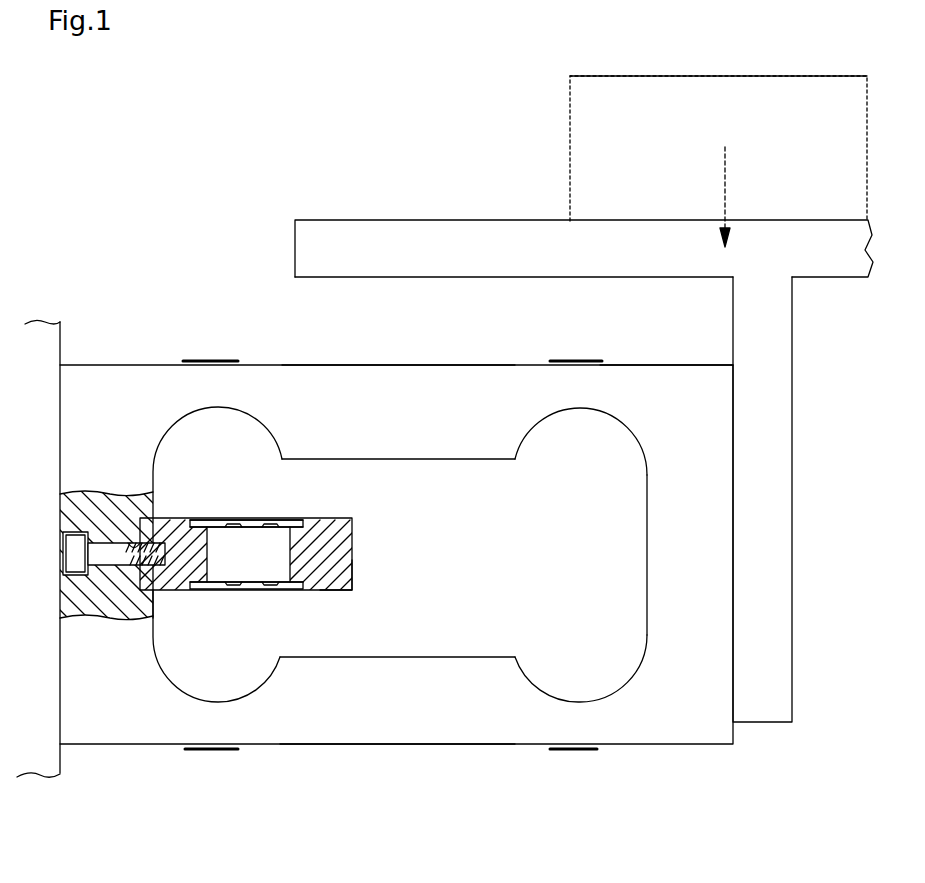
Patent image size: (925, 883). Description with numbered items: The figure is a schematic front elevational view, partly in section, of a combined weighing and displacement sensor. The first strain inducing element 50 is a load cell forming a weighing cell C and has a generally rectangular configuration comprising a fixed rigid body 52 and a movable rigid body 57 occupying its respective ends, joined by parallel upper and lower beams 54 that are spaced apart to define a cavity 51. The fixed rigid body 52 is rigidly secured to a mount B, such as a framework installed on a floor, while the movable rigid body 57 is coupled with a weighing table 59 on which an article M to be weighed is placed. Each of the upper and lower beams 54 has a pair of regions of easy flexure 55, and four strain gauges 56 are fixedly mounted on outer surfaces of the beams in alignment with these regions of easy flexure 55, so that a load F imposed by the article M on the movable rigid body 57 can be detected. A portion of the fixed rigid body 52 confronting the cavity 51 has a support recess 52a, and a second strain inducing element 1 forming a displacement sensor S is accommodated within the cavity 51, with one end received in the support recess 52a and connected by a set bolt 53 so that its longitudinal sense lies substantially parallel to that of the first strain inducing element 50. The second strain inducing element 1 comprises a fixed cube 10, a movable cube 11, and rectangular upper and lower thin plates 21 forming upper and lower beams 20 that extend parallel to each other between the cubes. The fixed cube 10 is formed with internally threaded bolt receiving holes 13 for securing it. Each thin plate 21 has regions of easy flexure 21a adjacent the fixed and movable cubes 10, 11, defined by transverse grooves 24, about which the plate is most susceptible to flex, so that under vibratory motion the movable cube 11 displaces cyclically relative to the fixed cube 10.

The second strain inducing element 1 is at (340, 504).
The fixed cube 10 is at (143, 578).
The movable cube 11 is at (353, 557).
The internally threaded bolt receiving holes 13 is at (123, 548).
The upper and lower beams 20 is at (247, 517).
The upper and lower thin plates 21 is at (205, 517).
The regions of easy flexure 21a is at (266, 517).
The transverse grooves 24 is at (248, 554).
The first strain inducing element 50 is at (414, 352).
The cavity 51 is at (445, 460).
The fixed rigid body 52 is at (62, 431).
The support recess 52a is at (155, 590).
The set bolt 53 is at (97, 552).
The upper and lower beams 54 is at (370, 375).
The regions of easy flexure 55 is at (237, 388).
The strain gauges 56 is at (213, 360).
The movable rigid body 57 is at (647, 555).
The weighing table 59 is at (521, 220).
The mount B is at (42, 345).
The weighing cell C is at (623, 365).
The load F is at (722, 168).
The article to be weighed M is at (607, 83).
The displacement sensor S is at (361, 595).